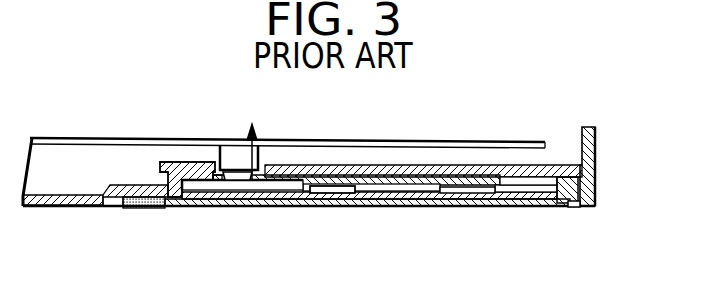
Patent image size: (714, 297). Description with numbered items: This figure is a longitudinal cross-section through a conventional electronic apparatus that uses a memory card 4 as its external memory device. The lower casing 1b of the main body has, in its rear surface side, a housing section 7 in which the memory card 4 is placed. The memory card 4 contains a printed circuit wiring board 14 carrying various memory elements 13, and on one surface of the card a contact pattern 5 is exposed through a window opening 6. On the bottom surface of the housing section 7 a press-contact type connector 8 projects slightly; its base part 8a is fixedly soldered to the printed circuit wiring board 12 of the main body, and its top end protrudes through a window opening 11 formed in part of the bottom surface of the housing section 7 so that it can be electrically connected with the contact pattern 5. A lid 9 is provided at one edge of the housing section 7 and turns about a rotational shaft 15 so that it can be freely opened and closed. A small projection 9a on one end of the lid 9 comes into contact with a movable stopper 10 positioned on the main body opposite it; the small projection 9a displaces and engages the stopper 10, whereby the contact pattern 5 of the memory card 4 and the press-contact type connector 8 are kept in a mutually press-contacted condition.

The lower casing 1b is at (590, 142).
The memory card 4 is at (570, 185).
The contact pattern 5 is at (249, 182).
The window opening 6 is at (211, 190).
The housing section 7 is at (175, 162).
The press-contact type connector 8 is at (258, 150).
The base part 8a is at (234, 152).
The lid 9 is at (508, 204).
The small projection 9a is at (177, 207).
The movable stopper 10 is at (125, 208).
The window opening 11 is at (214, 177).
The printed circuit wiring board 12 is at (80, 138).
The memory elements 13 is at (462, 198).
The printed circuit wiring board 14 is at (289, 193).
The rotational shaft 15 is at (571, 207).